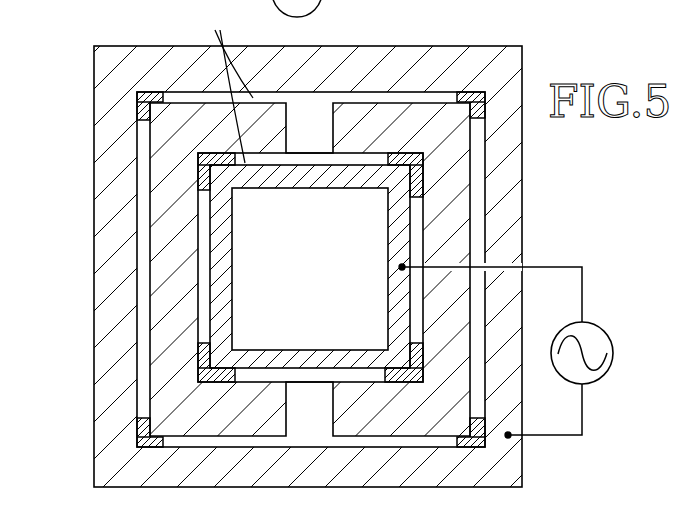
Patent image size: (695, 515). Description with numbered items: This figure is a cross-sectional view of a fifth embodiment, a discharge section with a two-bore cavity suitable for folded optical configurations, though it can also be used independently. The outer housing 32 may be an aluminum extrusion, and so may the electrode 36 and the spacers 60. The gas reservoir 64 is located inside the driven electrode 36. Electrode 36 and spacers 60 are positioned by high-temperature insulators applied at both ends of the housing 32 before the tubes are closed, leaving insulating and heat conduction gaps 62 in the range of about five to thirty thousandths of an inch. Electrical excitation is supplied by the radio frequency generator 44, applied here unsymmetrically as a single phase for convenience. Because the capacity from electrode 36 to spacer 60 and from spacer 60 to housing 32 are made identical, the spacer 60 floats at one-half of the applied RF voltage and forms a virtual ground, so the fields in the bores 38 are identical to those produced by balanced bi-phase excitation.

The housing 32 is at (516, 79).
The electrode 36 is at (210, 247).
The bores 38 is at (322, 134).
The radio frequency generator 44 is at (616, 323).
The spacers 60 is at (455, 215).
The insulating and heat conduction gaps 62 is at (225, 87).
The gas reservoir 64 is at (337, 244).